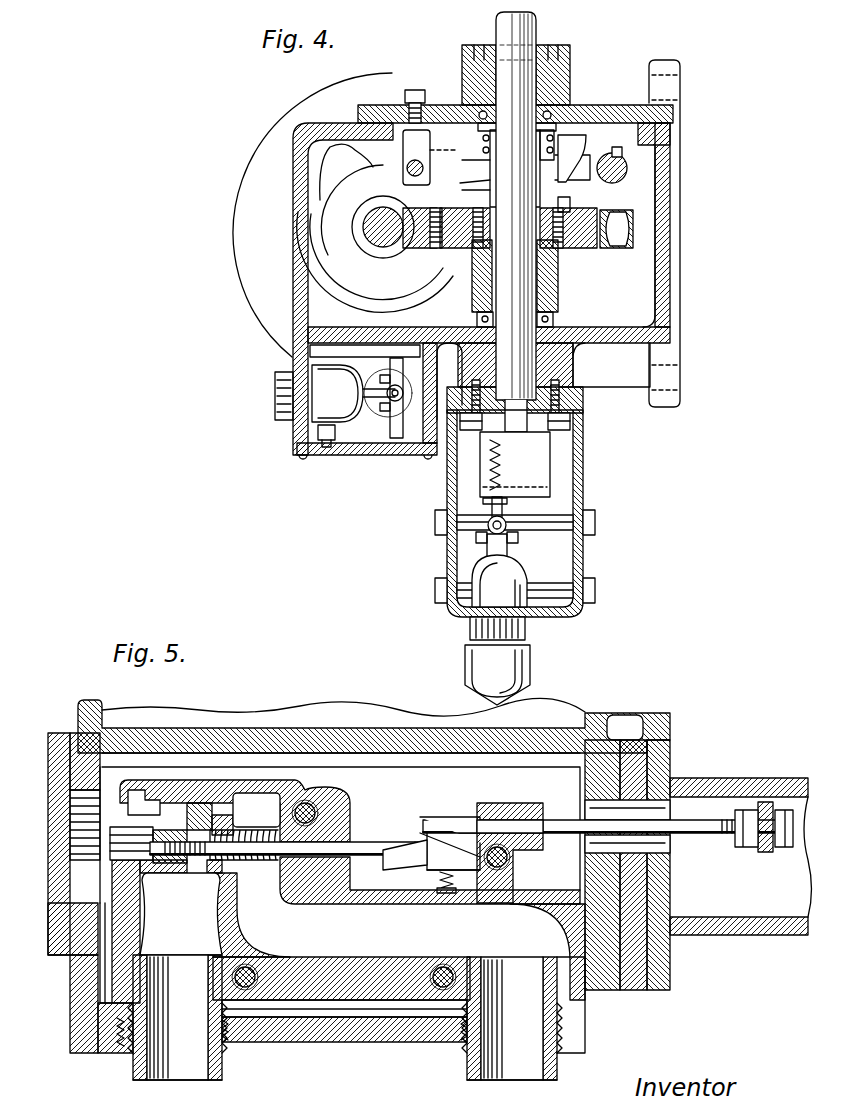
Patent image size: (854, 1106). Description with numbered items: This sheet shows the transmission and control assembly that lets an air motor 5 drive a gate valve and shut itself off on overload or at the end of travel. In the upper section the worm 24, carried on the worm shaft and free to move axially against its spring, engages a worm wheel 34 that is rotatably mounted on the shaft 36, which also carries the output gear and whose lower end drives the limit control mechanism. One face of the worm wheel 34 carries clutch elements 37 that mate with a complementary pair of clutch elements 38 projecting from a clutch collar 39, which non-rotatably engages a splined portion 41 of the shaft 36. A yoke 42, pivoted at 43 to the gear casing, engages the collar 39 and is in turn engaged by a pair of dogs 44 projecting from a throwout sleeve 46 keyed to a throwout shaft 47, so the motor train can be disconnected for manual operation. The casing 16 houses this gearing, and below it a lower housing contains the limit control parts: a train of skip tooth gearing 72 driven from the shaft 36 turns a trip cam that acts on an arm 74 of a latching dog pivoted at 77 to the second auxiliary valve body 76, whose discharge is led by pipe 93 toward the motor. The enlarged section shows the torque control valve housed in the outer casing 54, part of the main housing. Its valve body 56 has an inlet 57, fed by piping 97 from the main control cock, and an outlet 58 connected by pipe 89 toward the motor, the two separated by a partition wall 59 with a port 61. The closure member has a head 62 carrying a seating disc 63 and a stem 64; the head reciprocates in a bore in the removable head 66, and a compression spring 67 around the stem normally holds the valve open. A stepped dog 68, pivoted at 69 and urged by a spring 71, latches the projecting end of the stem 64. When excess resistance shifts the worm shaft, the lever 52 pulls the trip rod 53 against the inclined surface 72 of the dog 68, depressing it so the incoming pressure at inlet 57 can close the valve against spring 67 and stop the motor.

In FIG. 4, the air motor 5 is at (238, 210).
In FIG. 4, the casing 16 is at (593, 340).
In FIG. 4, the worm 24 is at (360, 232).
In FIG. 4, the worm wheel 34 is at (628, 230).
In FIG. 4, the shaft 36 is at (523, 295).
In FIG. 4, the clutch elements 37 is at (570, 203).
In FIG. 4, the clutch elements 38 is at (567, 188).
In FIG. 4, the clutch collar 39 is at (582, 132).
In FIG. 4, the splined portion 41 is at (557, 153).
In FIG. 4, the yoke 42 is at (605, 128).
In FIG. 4, the pivot 43 is at (414, 137).
In FIG. 4, the dogs 44 is at (652, 103).
In FIG. 4, the throwout sleeve 46 is at (626, 166).
In FIG. 4, the throwout shaft 47 is at (628, 177).
In FIG. 5, the lever 52 is at (767, 803).
In FIG. 4, the trip rod 53 is at (395, 401).
In FIG. 5, the trip rod 53 is at (695, 818).
In FIG. 4, the outer casing 54 is at (303, 422).
In FIG. 5, the outer casing 54 is at (287, 730).
In FIG. 4, the valve body 56 is at (336, 428).
In FIG. 5, the valve body 56 is at (307, 791).
In FIG. 5, the inlet 57 is at (173, 963).
In FIG. 5, the outlet 58 is at (523, 1018).
In FIG. 5, the partition wall 59 is at (230, 902).
In FIG. 5, the port 61 is at (235, 823).
In FIG. 5, the head 62 is at (192, 803).
In FIG. 5, the seating disc 63 is at (227, 793).
In FIG. 5, the stem 64 is at (375, 845).
In FIG. 5, the removable head 66 is at (140, 797).
In FIG. 5, the compression spring 67 is at (244, 859).
In FIG. 5, the stepped dog 68 is at (430, 837).
In FIG. 5, the pivot 69 is at (495, 868).
In FIG. 4, the spring 71 is at (582, 552).
In FIG. 5, the spring 71 is at (455, 900).
In FIG. 4, the inclined surface 72 is at (490, 462).
In FIG. 5, the inclined surface 72 is at (445, 843).
In FIG. 4, the arm 74 is at (503, 507).
In FIG. 4, the second auxiliary valve body 76 is at (527, 574).
In FIG. 4, the pivot 77 is at (518, 538).
In FIG. 4, the pipe 89 is at (292, 403).
In FIG. 5, the pipe 89 is at (466, 1075).
In FIG. 4, the pipe 93 is at (510, 663).
In FIG. 5, the piping 97 is at (220, 1082).